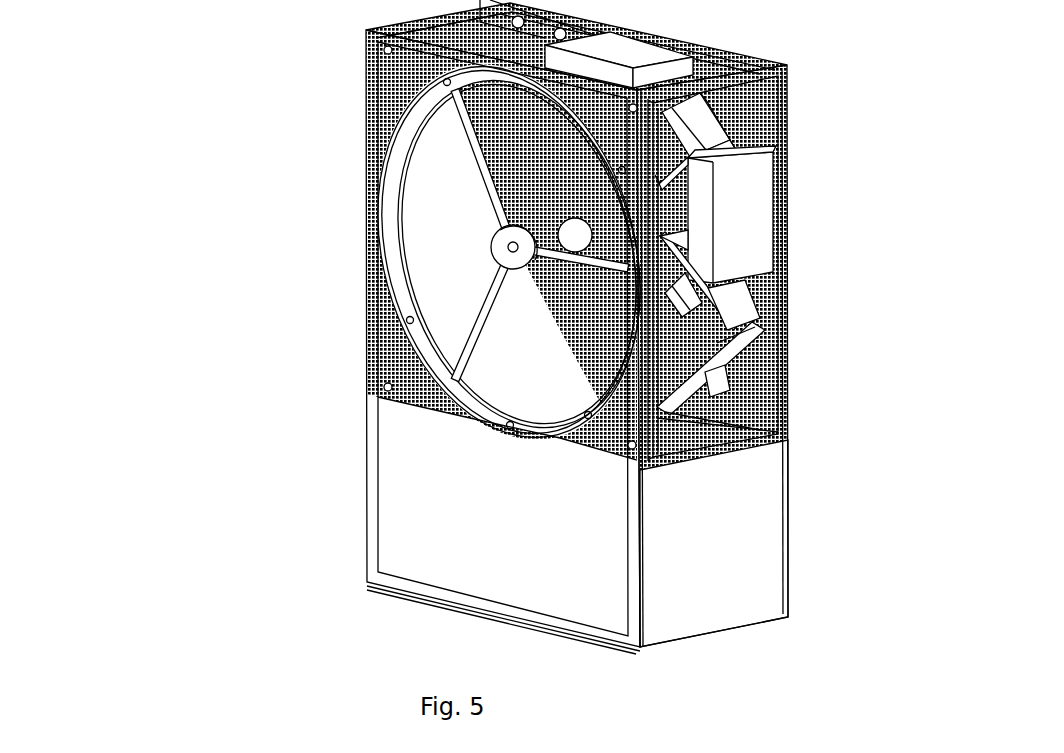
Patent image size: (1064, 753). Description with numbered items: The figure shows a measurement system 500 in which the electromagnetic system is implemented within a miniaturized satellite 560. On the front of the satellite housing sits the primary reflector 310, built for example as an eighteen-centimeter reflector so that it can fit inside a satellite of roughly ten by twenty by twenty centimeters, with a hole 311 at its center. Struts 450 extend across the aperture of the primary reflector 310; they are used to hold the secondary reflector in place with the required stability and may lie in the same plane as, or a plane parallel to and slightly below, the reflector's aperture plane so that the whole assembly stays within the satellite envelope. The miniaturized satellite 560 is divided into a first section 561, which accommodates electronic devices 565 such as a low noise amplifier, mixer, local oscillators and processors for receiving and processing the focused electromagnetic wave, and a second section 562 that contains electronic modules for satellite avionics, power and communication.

The measurement system 500 is at (80, 632).
The primary reflector 310 is at (445, 183).
The hole 311 is at (505, 232).
The struts 450 is at (460, 347).
The miniaturized satellite 560 is at (838, 91).
The first section 561 is at (793, 405).
The second section 562 is at (725, 517).
The electronic devices 565 is at (700, 342).